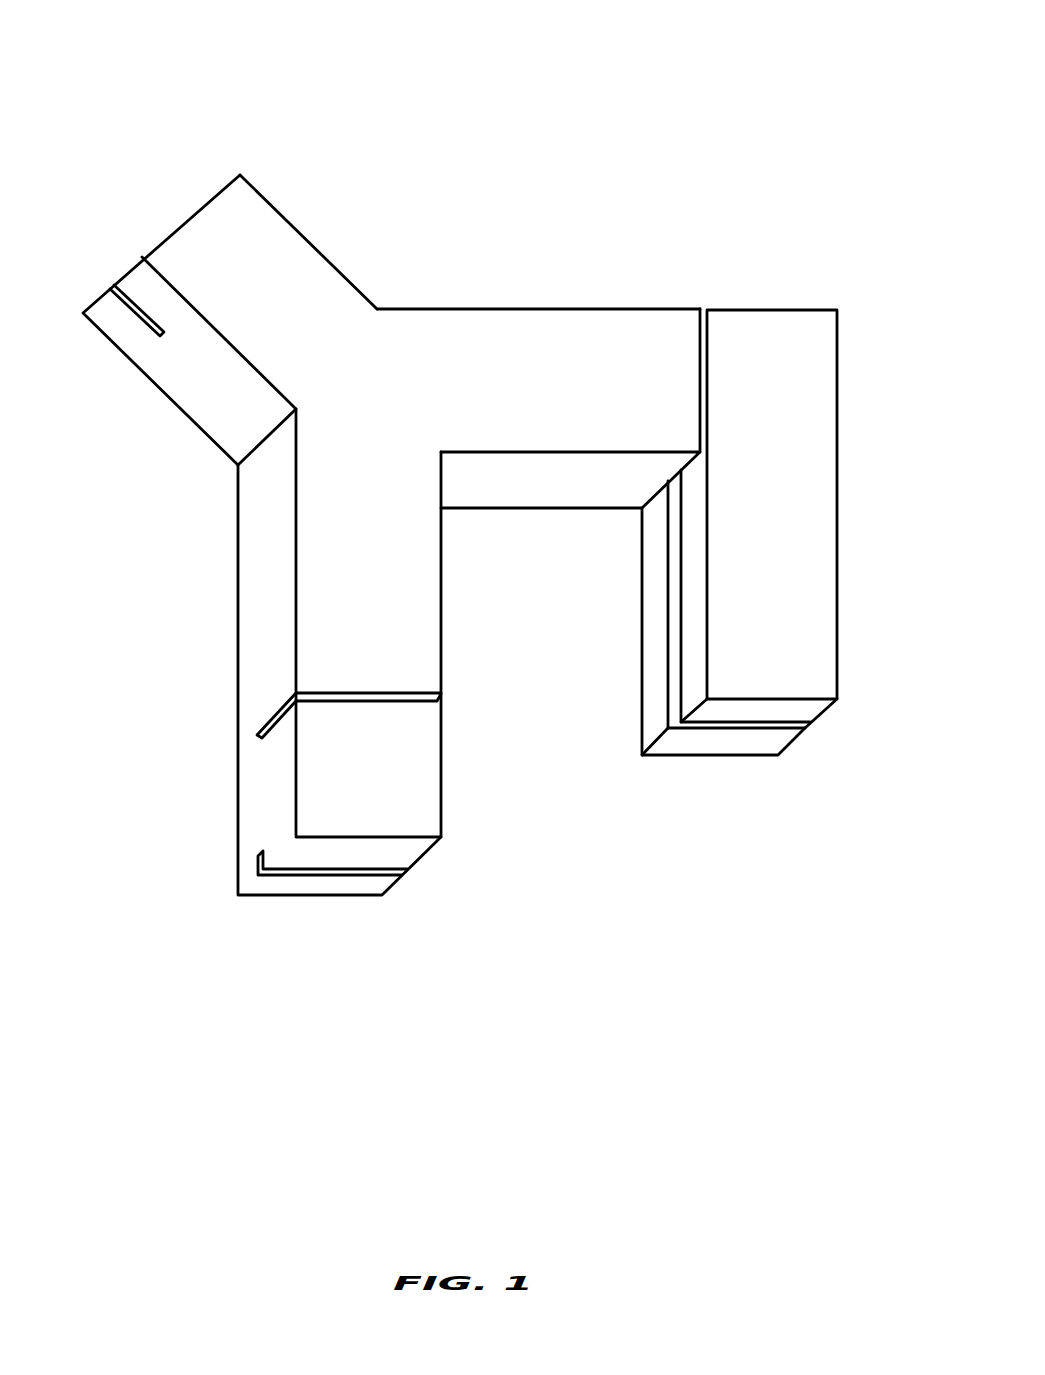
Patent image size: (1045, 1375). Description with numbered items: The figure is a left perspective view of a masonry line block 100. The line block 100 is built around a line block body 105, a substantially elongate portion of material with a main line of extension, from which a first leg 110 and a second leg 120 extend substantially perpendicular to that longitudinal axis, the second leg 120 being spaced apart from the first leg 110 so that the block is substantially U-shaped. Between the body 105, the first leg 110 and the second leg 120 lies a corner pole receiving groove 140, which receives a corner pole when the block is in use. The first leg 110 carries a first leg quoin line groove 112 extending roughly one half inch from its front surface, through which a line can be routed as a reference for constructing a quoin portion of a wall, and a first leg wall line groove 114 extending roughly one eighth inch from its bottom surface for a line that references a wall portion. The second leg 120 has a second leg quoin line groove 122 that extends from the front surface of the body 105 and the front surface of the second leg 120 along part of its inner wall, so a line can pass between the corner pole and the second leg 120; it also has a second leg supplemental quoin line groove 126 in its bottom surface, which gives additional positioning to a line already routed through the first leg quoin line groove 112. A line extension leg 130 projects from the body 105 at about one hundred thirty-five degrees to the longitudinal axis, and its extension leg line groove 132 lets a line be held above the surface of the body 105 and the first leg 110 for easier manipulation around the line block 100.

The line block 100 is at (232, 47).
The line block body 105 is at (518, 332).
The first leg 110 is at (337, 572).
The first leg quoin line groove 112 is at (272, 718).
The first leg wall line groove 114 is at (293, 877).
The second leg 120 is at (783, 483).
The second leg quoin line groove 122 is at (708, 330).
The second leg supplemental quoin line groove 126 is at (780, 731).
The line extension leg 130 is at (272, 253).
The extension leg line groove 132 is at (148, 330).
The corner pole receiving groove 140 is at (548, 703).